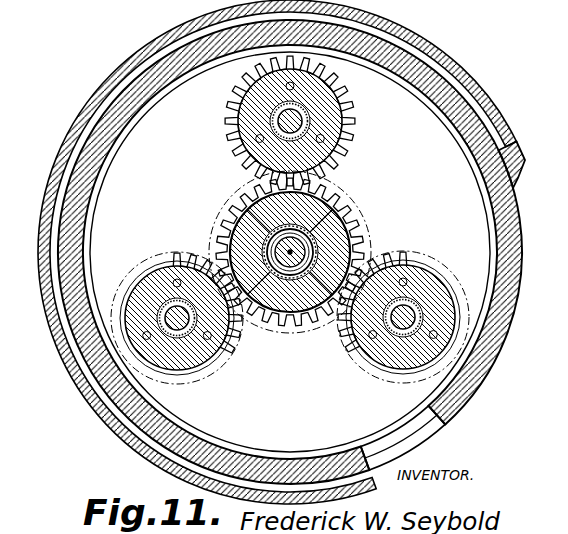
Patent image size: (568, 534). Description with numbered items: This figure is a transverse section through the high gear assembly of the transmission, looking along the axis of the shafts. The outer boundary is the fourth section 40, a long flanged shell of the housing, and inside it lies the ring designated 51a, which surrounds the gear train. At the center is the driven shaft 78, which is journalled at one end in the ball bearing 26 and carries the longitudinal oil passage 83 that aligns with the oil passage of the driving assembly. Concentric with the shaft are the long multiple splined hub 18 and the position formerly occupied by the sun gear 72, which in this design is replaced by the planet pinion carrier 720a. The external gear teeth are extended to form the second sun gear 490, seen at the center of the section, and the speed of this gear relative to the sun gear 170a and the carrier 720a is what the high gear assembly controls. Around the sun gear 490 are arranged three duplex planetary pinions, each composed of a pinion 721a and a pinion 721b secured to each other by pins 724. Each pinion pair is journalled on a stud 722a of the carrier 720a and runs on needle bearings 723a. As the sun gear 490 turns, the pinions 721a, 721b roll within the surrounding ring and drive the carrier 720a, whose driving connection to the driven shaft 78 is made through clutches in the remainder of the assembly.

The fourth section 40 is at (115, 430).
The internal ring gear 51a is at (97, 147).
The planet pinion carrier 720a is at (145, 224).
The ball bearing 26 is at (262, 228).
The second sun gear 490 is at (334, 185).
The sun gear 170a is at (351, 200).
The driven shaft 78 is at (318, 244).
The sun gear 72 is at (322, 250).
The longitudinal oil passage 83 is at (290, 256).
The long multiple splined hub 18 is at (300, 307).
The duplex planetary pinion 721a is at (347, 122).
The duplex planetary pinion 721b is at (347, 100).
The pins 724 is at (285, 86).
The needle bearings 723a is at (274, 112).
The studs 722a is at (278, 121).